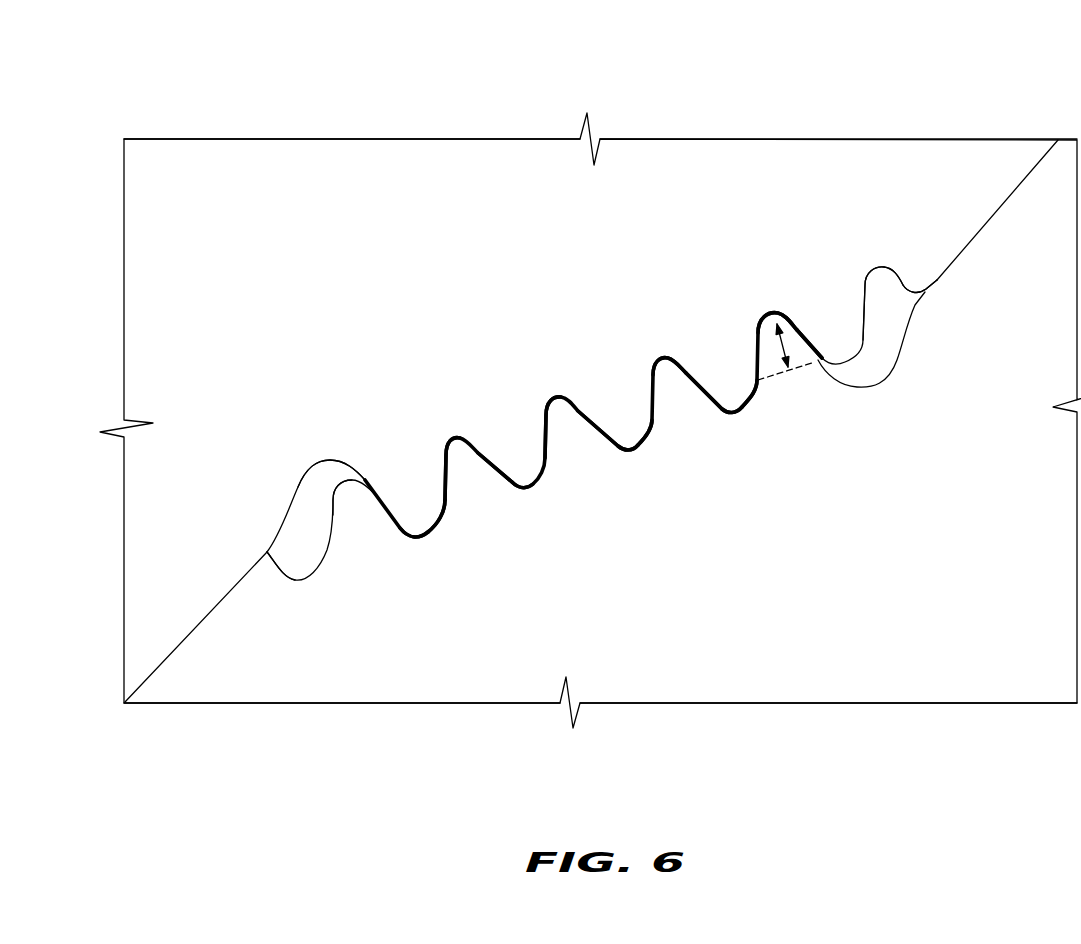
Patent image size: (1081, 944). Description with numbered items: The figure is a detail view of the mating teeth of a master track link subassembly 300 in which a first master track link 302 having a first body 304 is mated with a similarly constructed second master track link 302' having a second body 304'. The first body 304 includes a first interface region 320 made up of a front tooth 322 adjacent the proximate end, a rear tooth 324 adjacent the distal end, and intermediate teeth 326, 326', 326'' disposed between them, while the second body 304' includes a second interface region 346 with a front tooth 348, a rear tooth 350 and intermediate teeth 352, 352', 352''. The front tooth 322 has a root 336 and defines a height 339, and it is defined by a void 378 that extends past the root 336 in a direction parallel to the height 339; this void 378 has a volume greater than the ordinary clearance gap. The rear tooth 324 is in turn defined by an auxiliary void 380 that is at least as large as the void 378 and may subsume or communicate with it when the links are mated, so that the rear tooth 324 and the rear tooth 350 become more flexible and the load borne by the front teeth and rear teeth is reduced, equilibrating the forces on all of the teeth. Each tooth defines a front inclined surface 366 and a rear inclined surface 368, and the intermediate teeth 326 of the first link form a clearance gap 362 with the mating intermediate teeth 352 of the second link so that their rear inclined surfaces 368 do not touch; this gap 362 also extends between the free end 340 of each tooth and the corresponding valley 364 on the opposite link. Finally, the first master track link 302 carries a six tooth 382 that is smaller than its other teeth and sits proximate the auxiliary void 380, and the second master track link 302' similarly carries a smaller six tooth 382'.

The master track link subassembly 300 is at (748, 103).
The first master track link 302 is at (451, 630).
The first body 304 is at (828, 630).
The second master track link 302' is at (352, 209).
The second body 304' is at (765, 208).
The first interface region 320 is at (288, 595).
The front tooth 322 is at (790, 352).
The rear tooth 324 is at (353, 513).
The intermediate tooth 326 is at (710, 421).
The intermediate tooth 326' is at (491, 506).
The intermediate tooth 326'' is at (582, 467).
The root 336 is at (757, 387).
The height 339 is at (785, 338).
The free end 340 is at (665, 357).
The second interface region 346 is at (322, 452).
The front tooth 348 is at (409, 510).
The rear tooth 350 is at (835, 343).
The intermediate tooth 352 is at (515, 438).
The intermediate tooth 352' is at (753, 319).
The intermediate tooth 352'' is at (615, 389).
The clearance gap 362 is at (448, 440).
The valley 364 is at (645, 453).
The front inclined surface 366 is at (597, 423).
The rear inclined surface 368 is at (442, 487).
The void 378 is at (323, 473).
The auxiliary void 380 is at (310, 566).
The six tooth 382 is at (247, 534).
The six tooth 382' is at (951, 300).